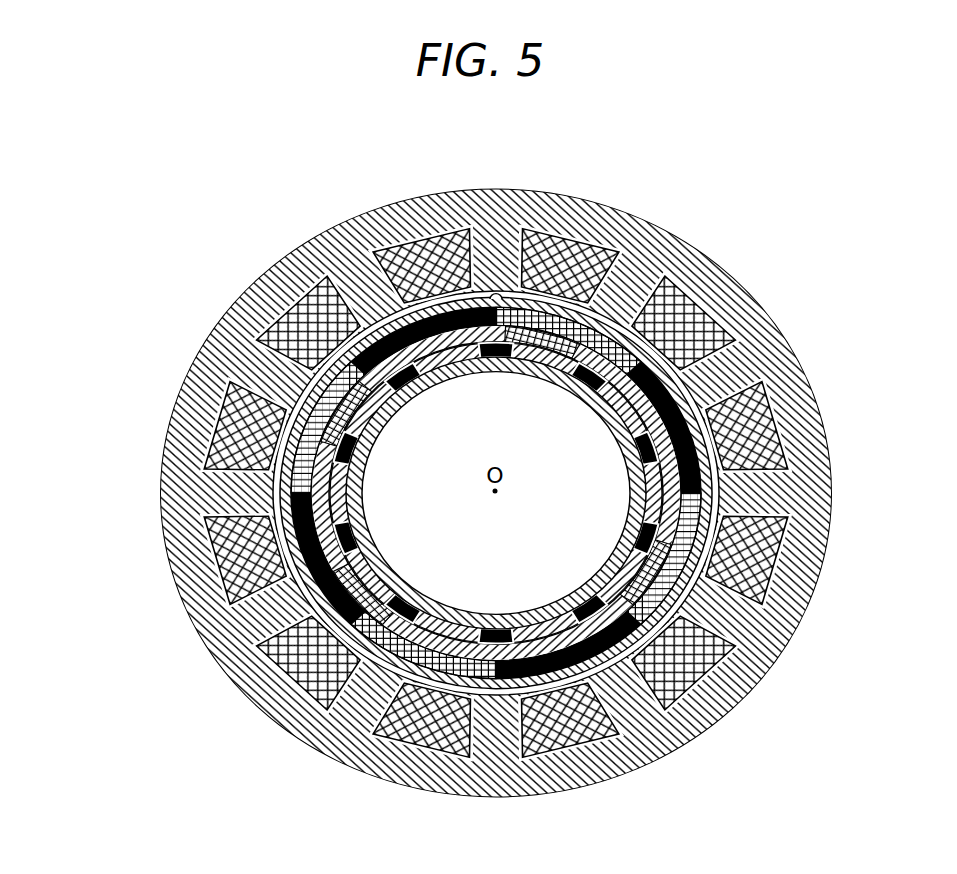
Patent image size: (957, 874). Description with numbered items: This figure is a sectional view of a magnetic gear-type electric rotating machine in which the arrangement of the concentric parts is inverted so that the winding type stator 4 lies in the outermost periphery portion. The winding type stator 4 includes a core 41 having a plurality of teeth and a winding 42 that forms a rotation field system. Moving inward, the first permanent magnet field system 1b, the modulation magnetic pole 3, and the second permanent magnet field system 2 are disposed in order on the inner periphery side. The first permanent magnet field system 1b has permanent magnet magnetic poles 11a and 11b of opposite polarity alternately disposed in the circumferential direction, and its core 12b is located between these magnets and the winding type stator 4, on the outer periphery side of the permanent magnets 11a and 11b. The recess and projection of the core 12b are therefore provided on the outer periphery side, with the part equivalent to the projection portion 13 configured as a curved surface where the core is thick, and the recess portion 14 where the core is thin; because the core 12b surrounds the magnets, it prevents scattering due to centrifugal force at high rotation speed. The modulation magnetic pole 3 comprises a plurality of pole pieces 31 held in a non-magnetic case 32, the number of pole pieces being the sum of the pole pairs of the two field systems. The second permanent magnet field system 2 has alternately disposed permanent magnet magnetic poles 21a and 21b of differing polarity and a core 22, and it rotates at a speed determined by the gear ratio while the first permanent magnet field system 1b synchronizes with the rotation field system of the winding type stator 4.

The winding type stator 4 is at (448, 795).
The core 41 is at (345, 735).
The winding 42 is at (423, 730).
The projection portion 13 is at (352, 262).
The recess portion 14 is at (495, 297).
The first permanent magnet field system 1b is at (307, 390).
The permanent magnet magnetic pole 11a is at (383, 343).
The permanent magnet magnetic pole 11b is at (303, 445).
The core 12b is at (288, 472).
The second permanent magnet field system 2 is at (532, 369).
The permanent magnet magnetic pole 21a is at (597, 387).
The permanent magnet magnetic pole 21b is at (622, 407).
The core 22 is at (638, 473).
The modulation magnetic pole 3 is at (330, 460).
The pole piece 31 is at (340, 572).
The non-magnetic case 32 is at (443, 647).